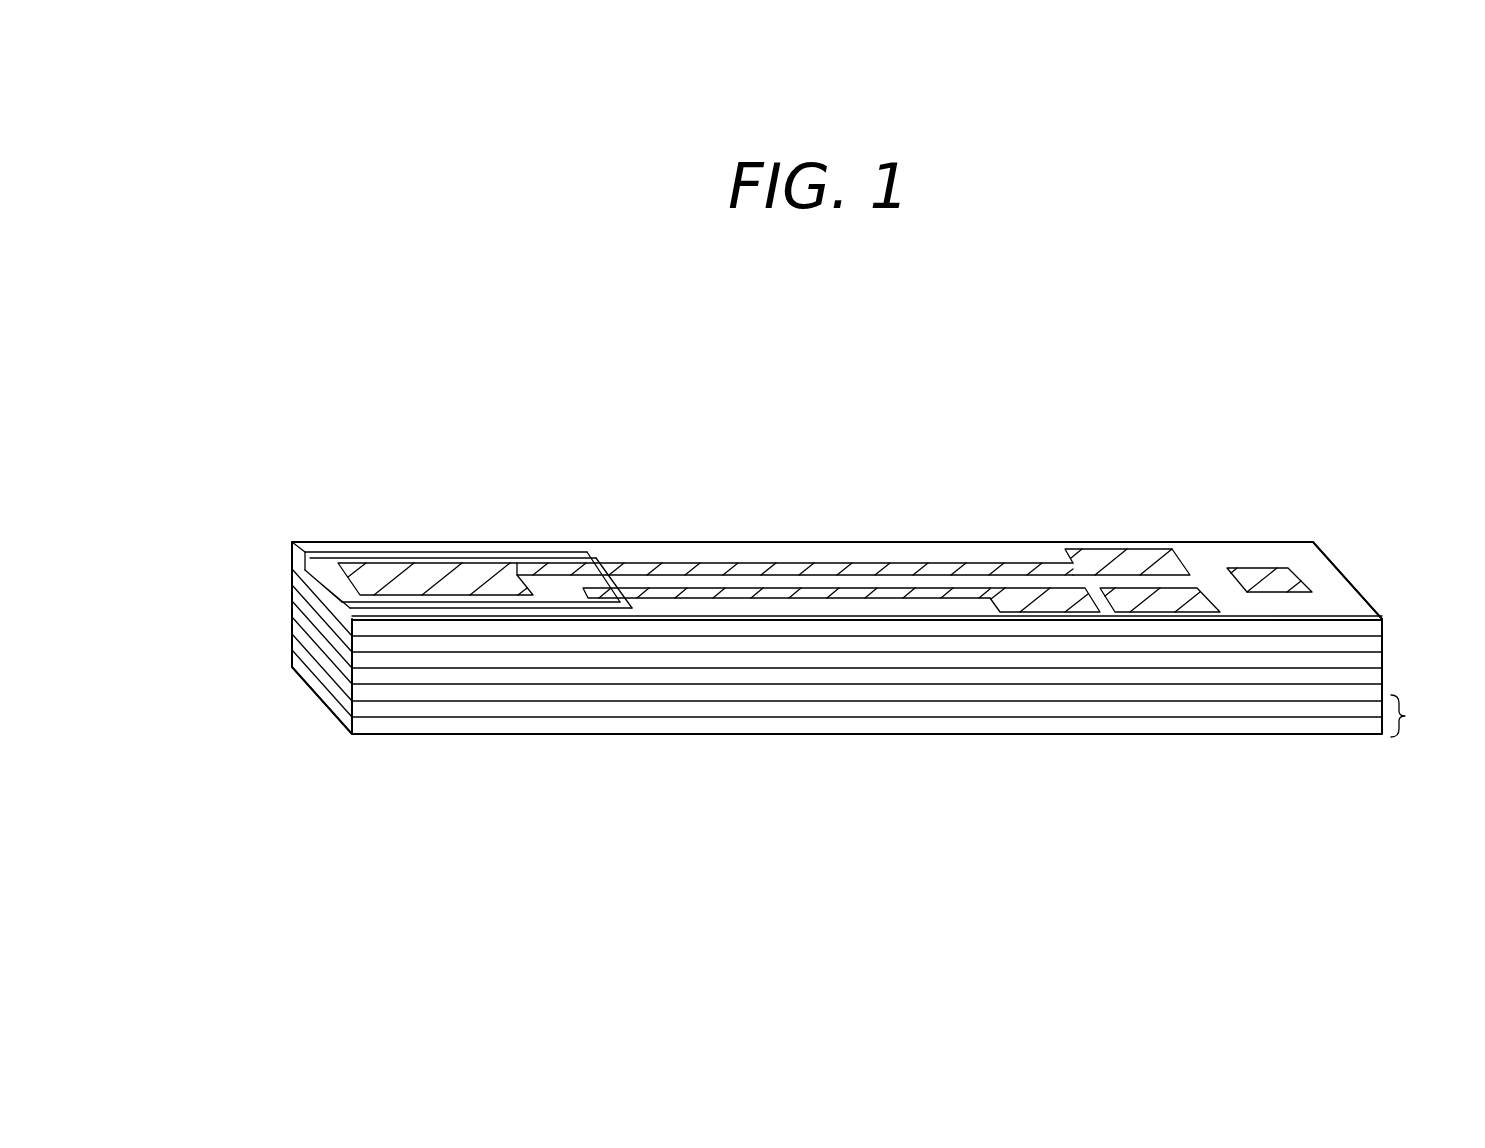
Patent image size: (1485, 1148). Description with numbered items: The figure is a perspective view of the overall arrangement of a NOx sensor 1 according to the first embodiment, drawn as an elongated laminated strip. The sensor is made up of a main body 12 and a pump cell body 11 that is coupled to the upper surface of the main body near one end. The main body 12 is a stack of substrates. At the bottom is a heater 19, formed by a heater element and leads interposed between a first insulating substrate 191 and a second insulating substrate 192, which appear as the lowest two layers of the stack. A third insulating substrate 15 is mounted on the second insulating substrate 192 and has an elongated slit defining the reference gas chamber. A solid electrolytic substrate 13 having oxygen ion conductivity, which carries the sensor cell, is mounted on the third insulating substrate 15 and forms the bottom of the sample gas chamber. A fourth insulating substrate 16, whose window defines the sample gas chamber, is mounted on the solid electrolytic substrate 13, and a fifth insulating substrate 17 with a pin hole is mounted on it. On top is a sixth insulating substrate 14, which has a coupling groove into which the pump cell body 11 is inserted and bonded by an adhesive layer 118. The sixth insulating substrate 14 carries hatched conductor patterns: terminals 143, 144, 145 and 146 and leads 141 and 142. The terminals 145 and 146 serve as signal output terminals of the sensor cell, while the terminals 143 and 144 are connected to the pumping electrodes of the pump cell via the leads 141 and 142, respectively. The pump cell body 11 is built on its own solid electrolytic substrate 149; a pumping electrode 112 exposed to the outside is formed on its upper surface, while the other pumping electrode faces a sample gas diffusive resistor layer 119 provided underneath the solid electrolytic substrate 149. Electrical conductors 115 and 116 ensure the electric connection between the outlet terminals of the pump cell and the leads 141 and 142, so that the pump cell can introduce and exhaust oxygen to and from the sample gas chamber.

The NOx sensor 1 is at (515, 467).
The pump cell body 11 is at (377, 532).
The main body 12 is at (1026, 507).
The solid electrolytic substrate 13 is at (785, 678).
The sixth insulating substrate 14 is at (1347, 593).
The third insulating substrate 15 is at (838, 693).
The fourth insulating substrate 16 is at (723, 663).
The fifth insulating substrate 17 is at (647, 645).
The heater 19 is at (1417, 716).
The pumping electrode 112 is at (448, 573).
The electrical conductor 115 is at (628, 589).
The electrical conductor 116 is at (606, 580).
The adhesive layer 118 is at (565, 560).
The sample gas diffusive resistor layer 119 is at (307, 602).
The lead 141 is at (935, 590).
The lead 142 is at (822, 566).
The terminal 143 is at (1055, 605).
The terminal 144 is at (1118, 560).
The terminal 145 is at (1273, 573).
The terminal 146 is at (1202, 588).
The solid electrolytic substrate 149 is at (323, 563).
The first insulating substrate 191 is at (1280, 725).
The second insulating substrate 192 is at (1150, 707).